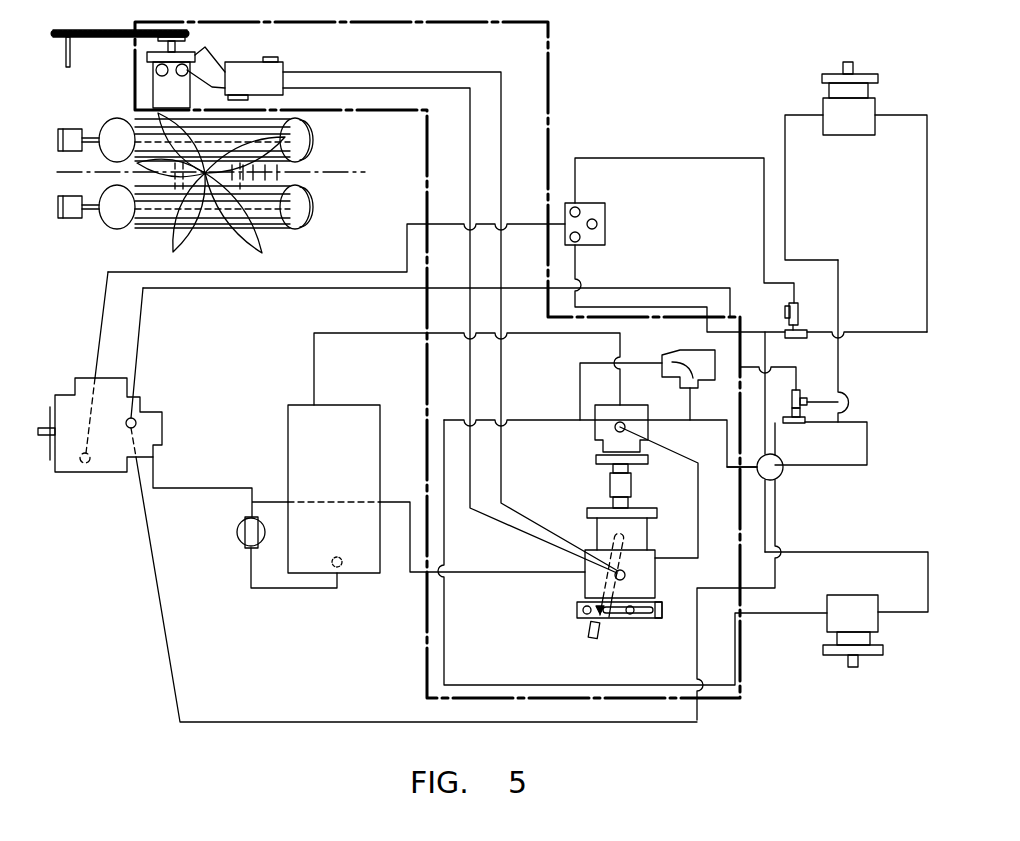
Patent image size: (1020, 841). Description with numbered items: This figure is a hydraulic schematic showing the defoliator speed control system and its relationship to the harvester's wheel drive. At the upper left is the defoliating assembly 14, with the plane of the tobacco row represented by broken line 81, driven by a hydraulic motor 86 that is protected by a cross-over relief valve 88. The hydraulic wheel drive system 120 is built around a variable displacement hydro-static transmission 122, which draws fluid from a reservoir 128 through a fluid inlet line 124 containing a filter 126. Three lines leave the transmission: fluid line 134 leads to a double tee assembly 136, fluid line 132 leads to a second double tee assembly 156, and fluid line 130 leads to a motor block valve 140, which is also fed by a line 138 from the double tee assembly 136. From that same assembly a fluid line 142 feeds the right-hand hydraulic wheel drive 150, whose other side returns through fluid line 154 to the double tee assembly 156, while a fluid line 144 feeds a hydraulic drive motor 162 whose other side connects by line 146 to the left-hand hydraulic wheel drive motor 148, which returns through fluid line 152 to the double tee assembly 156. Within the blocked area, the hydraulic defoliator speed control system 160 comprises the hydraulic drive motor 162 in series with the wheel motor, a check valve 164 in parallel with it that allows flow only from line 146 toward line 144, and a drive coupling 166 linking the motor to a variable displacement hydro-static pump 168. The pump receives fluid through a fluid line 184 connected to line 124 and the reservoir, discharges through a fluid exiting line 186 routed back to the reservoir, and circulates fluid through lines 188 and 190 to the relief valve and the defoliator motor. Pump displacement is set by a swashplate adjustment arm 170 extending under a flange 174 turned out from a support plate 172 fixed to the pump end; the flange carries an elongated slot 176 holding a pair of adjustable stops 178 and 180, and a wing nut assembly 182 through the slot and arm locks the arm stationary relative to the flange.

The defoliating assembly 14 is at (325, 152).
The plane of the row 81 is at (365, 172).
The hydraulic motor 86 is at (168, 88).
The cross-over relief valve 88 is at (285, 62).
The hydraulic wheel drive system 120 is at (153, 258).
The variable displacement hydro-static transmission 122 is at (110, 453).
The fluid inlet line 124 is at (172, 488).
The filter 126 is at (250, 540).
The reservoir 128 is at (367, 552).
The fluid line 130 is at (207, 272).
The fluid line 132 is at (260, 288).
The fluid line 134 is at (318, 720).
The double tee assembly 136 is at (808, 410).
The line 138 is at (787, 360).
The motor block valve 140 is at (608, 222).
The fluid line 142 is at (840, 380).
The fluid line 144 is at (872, 452).
The line 146 is at (557, 422).
The left-hand hydraulic wheel drive motor 148 is at (863, 622).
The hydraulic wheel drive 150 is at (853, 123).
The fluid line 152 is at (823, 552).
The fluid line 154 is at (927, 220).
The second double tee assembly 156 is at (800, 310).
The hydraulic defoliator speed control system 160 is at (403, 649).
The hydraulic drive motor 162 is at (615, 435).
The check valve 164 is at (708, 367).
The drive coupling 166 is at (630, 490).
The variable displacement hydro-static pump 168 is at (595, 573).
The swashplate adjustment arm 170 is at (599, 632).
The support plate 172 is at (580, 610).
The flange 174 is at (665, 612).
The elongated slot 176 is at (668, 600).
The adjustable stop 178 is at (633, 618).
The adjustable stop 180 is at (590, 620).
The wing nut assembly 182 is at (587, 635).
The fluid line 184 is at (500, 574).
The fluid exiting line 186 is at (702, 515).
The line 188 is at (468, 468).
The line 190 is at (502, 392).